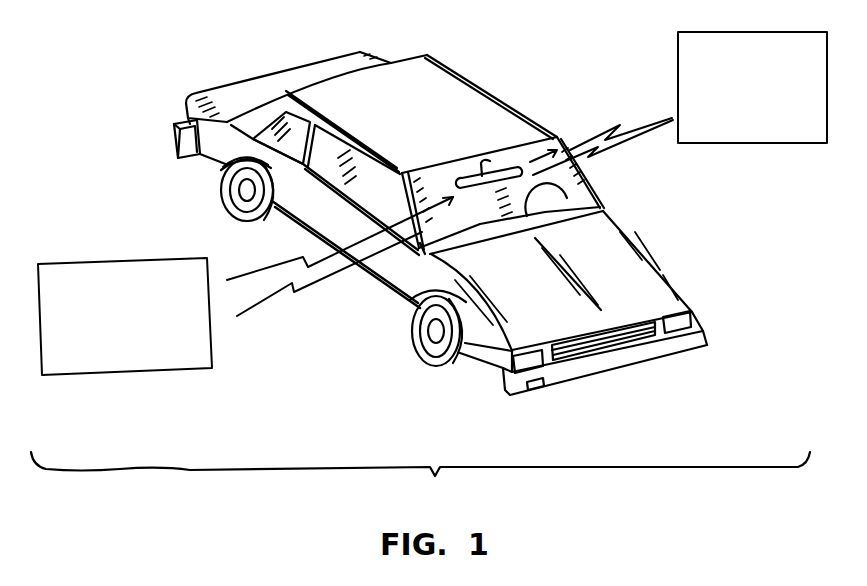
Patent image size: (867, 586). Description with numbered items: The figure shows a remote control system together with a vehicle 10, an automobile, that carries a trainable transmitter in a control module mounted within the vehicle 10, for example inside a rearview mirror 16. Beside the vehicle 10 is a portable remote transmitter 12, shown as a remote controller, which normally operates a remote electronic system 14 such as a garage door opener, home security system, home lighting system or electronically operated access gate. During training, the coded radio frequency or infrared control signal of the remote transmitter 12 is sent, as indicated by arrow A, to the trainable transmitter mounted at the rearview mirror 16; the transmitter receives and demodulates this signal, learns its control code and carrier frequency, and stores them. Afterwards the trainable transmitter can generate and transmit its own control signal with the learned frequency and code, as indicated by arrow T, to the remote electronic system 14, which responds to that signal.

The vehicle 10 is at (493, 90).
The remote transmitter 12 is at (205, 370).
The remote electronic system 14 is at (740, 143).
The rearview mirror 16 is at (474, 180).
The arrow A is at (312, 290).
The arrow T is at (600, 130).